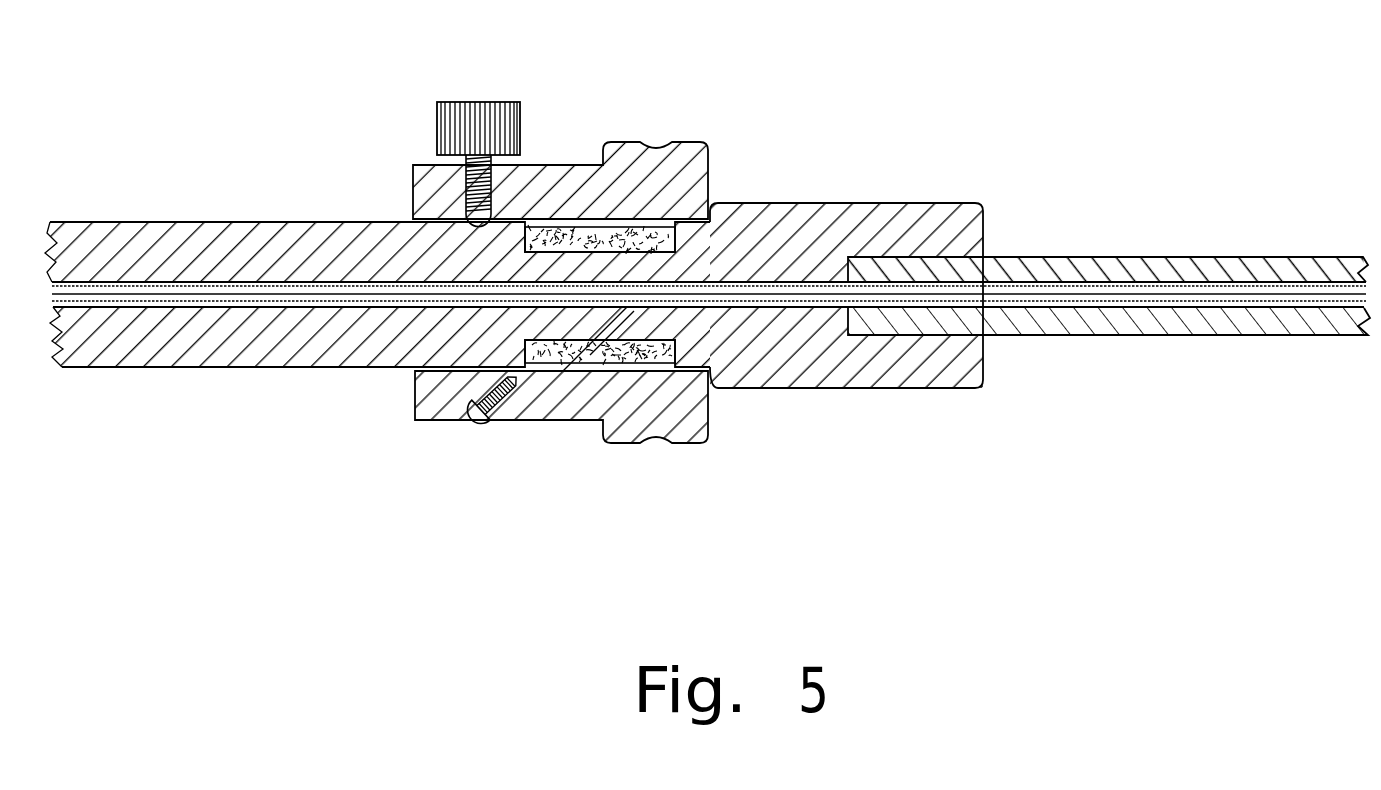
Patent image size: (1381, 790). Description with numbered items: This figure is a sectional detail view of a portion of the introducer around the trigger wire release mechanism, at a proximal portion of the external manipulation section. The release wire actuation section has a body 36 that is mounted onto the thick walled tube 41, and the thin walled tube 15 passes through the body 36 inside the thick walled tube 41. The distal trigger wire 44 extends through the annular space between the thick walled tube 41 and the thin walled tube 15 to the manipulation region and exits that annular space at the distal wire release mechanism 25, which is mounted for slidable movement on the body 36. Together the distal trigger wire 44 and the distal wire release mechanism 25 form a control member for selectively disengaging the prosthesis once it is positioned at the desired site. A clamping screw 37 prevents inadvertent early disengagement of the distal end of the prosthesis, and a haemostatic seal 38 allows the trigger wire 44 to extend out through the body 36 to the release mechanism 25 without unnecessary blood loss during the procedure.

The thin walled tube 15 is at (763, 293).
The distal wire release mechanism 25 is at (478, 432).
The body 36 is at (808, 212).
The clamping screw 37 is at (462, 101).
The haemostatic seal 38 is at (582, 226).
The thick walled tube 41 is at (1080, 260).
The distal trigger wire 44 is at (561, 372).